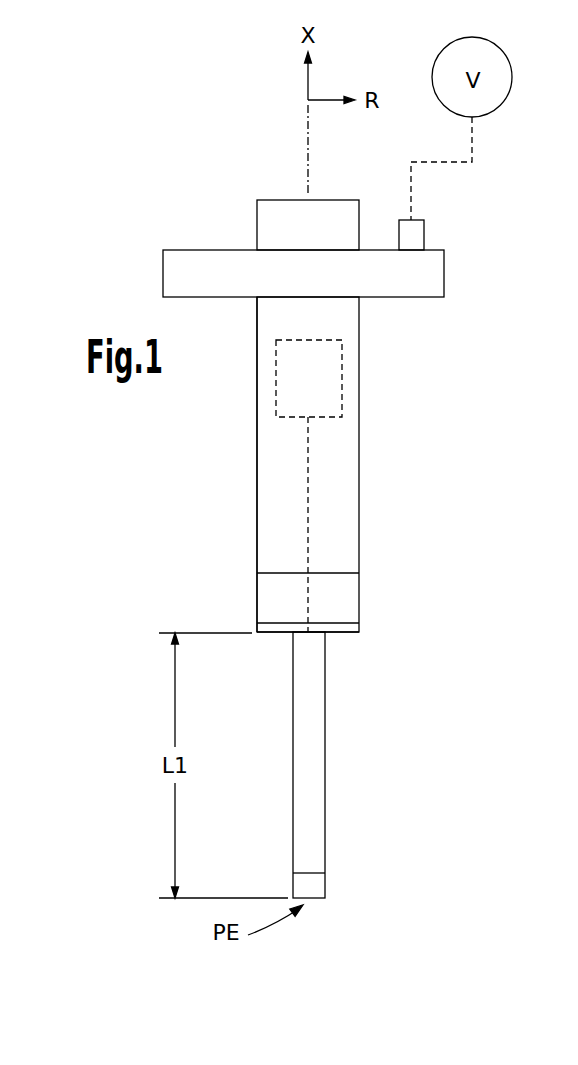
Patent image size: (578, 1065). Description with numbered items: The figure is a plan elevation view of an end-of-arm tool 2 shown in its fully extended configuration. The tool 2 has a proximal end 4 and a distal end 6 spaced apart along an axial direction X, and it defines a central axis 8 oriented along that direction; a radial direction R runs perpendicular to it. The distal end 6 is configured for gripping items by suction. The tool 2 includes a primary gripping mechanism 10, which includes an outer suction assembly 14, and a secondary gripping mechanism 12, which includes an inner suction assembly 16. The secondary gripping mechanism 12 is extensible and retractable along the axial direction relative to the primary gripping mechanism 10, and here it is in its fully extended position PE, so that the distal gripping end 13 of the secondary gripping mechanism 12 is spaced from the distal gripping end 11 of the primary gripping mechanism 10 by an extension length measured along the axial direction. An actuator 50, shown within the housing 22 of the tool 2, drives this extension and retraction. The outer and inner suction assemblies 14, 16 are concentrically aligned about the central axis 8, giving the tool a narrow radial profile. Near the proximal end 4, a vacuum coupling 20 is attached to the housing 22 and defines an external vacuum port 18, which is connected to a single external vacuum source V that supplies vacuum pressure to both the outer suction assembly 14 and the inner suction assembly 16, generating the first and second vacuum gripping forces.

The end-of-arm tool 2 is at (158, 226).
The proximal end 4 is at (288, 200).
The distal end 6 is at (356, 904).
The central axis 8 is at (308, 152).
The primary gripping mechanism 10 is at (371, 464).
The distal gripping end of the primary gripping mechanism 11 is at (335, 635).
The secondary gripping mechanism 12 is at (382, 765).
The distal gripping end of the secondary gripping mechanism 13 is at (313, 900).
The outer suction assembly 14 is at (366, 540).
The inner suction assembly 16 is at (332, 783).
The external vacuum port 18 is at (417, 237).
The vacuum coupling 20 is at (291, 287).
The housing 22 is at (257, 508).
The actuator 50 is at (342, 380).